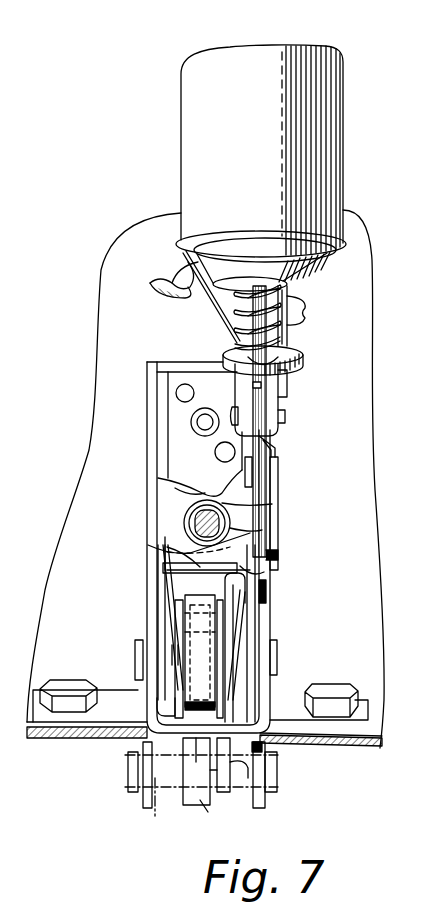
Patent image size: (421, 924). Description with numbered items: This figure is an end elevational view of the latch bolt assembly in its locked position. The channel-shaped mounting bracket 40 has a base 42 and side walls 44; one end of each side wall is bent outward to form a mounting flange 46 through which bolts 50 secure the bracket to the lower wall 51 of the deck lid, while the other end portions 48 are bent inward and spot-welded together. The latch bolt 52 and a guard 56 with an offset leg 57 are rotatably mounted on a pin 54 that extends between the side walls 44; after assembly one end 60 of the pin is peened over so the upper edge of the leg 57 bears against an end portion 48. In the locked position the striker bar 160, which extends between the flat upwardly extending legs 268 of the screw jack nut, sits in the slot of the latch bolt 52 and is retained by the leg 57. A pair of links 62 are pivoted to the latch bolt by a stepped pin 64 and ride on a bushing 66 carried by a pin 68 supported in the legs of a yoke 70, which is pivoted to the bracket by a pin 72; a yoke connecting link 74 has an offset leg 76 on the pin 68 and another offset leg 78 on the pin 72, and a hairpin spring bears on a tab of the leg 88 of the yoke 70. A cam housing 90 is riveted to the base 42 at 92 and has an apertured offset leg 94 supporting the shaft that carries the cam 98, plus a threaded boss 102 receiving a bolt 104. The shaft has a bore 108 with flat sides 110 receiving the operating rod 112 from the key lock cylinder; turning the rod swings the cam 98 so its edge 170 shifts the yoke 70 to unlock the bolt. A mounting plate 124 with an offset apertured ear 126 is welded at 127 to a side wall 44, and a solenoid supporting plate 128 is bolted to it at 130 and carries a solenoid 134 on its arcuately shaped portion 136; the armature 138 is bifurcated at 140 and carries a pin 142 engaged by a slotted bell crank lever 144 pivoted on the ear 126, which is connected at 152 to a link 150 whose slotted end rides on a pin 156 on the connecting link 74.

The solenoid 134 is at (318, 66).
The arcuately shaped portion 136 is at (178, 265).
The armature 138 is at (265, 264).
The bolted connection 130 is at (305, 300).
The solenoid supporting plate 128 is at (298, 326).
The base 42 is at (205, 368).
The side walls 44 is at (156, 452).
The cam housing 90 is at (159, 443).
The rivet connection 92 is at (176, 393).
The threaded boss 102 is at (192, 420).
The bolt 104 is at (205, 432).
The cam 98 is at (172, 486).
The bore 108 is at (184, 523).
The edge 170 is at (160, 548).
The operating rod 112 is at (170, 552).
The flat sides 110 is at (230, 528).
The apertured offset leg 94 is at (246, 505).
The offset apertured ear 126 is at (272, 438).
The bifurcated portion 140 is at (262, 383).
The pin 142 is at (286, 410).
The bell crank lever 144 is at (273, 454).
The pivot connection 152 is at (253, 478).
The mounting plate 124 is at (279, 492).
The link 150 is at (279, 555).
The weld 127 is at (252, 571).
The pin 72 is at (155, 580).
The yoke 70 is at (168, 600).
The offset leg 78 is at (200, 578).
The stepped pin 64 is at (199, 656).
The pin 68 is at (200, 697).
The offset leg 76 is at (236, 650).
The yoke connecting link 74 is at (246, 620).
The leg 88 is at (240, 700).
The pin 156 is at (268, 585).
The mounting bracket 40 is at (280, 604).
The pin 54 is at (140, 650).
The links 62 is at (170, 655).
The bushing 66 is at (163, 706).
The end of pin 60 is at (272, 670).
The bolts 50 is at (64, 690).
The mounting flange 46 is at (45, 740).
The lower wall 51 is at (77, 739).
The flat upwardly extending legs 268 is at (140, 800).
The end portions 48 is at (200, 771).
The offset leg 57 is at (228, 796).
The guard 56 is at (262, 754).
The striker bar 160 is at (153, 806).
The latch bolt 52 is at (211, 805).